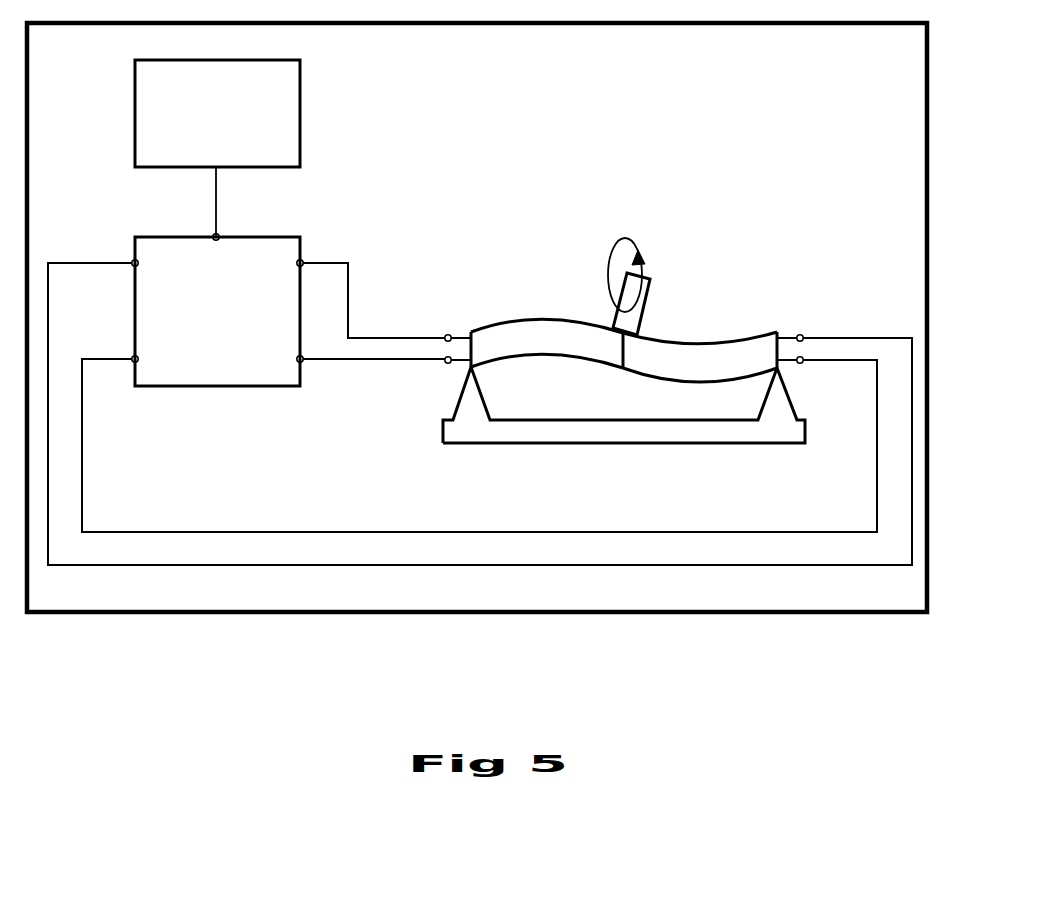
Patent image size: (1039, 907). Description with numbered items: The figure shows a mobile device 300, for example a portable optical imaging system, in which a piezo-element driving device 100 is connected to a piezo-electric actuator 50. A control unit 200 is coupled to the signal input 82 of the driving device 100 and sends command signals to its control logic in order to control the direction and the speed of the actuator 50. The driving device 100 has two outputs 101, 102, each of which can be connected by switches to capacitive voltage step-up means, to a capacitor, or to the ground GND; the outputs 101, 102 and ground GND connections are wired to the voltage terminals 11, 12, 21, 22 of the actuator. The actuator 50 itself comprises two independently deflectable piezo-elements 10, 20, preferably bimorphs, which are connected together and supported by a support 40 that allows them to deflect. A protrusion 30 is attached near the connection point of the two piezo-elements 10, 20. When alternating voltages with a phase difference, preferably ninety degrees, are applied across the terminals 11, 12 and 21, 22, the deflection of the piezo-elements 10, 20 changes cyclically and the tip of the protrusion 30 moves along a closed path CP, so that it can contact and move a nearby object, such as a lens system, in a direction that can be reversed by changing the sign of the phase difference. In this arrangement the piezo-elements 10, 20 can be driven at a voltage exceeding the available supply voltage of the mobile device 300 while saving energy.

The mobile device 300 is at (735, 613).
The control unit 200 is at (300, 118).
The piezo-element driving device 100 is at (240, 387).
The signal input 82 is at (222, 234).
The output 102 is at (131, 260).
The output 101 is at (303, 260).
The ground GND is at (131, 357).
The voltage terminal 12 is at (443, 335).
The voltage terminal 11 is at (445, 364).
The voltage terminal 22 is at (806, 335).
The voltage terminal 21 is at (806, 364).
The piezo-element 10 is at (512, 321).
The piezo-element 20 is at (749, 333).
The protrusion 30 is at (650, 300).
The support 40 is at (737, 444).
The closed path CP is at (607, 273).
The piezo-electric actuator 50 is at (520, 263).